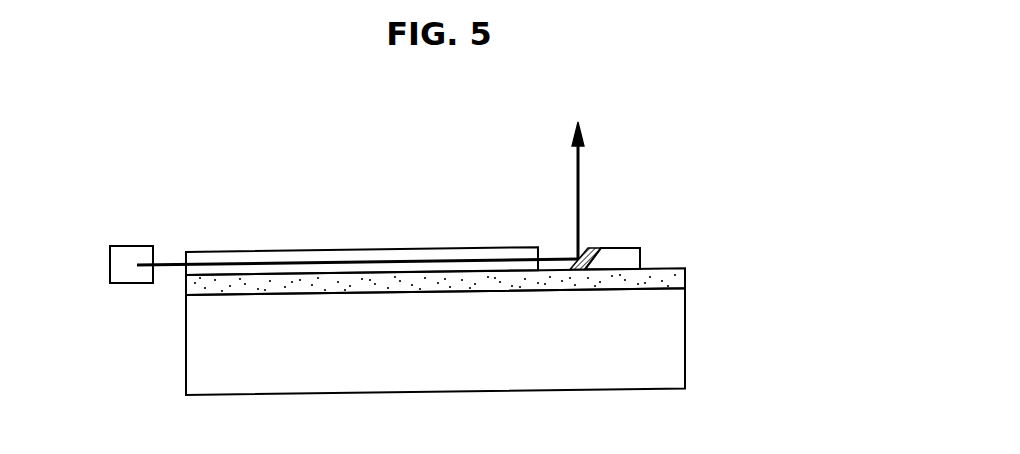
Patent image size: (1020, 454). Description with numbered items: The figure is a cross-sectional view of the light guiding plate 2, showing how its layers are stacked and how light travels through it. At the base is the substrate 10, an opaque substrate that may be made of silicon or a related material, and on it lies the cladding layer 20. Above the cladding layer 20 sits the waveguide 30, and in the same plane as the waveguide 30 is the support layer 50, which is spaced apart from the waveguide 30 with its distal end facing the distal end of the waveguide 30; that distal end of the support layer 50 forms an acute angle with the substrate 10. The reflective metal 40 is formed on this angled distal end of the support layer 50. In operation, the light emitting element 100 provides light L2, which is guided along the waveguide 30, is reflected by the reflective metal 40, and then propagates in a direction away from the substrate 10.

The substrate 10 is at (673, 330).
The cladding layer 20 is at (686, 270).
The waveguide 30 is at (423, 252).
The reflective metal 40 is at (591, 246).
The support layer 50 is at (622, 253).
The light emitting element 100 is at (131, 284).
The light L2 is at (575, 157).
The light guiding plate 2 is at (720, 193).